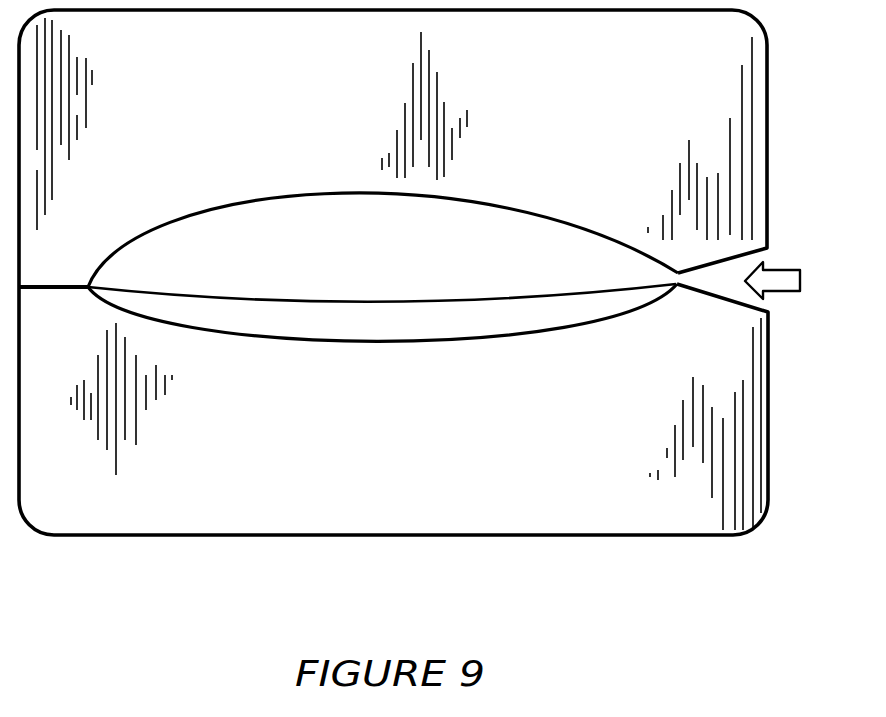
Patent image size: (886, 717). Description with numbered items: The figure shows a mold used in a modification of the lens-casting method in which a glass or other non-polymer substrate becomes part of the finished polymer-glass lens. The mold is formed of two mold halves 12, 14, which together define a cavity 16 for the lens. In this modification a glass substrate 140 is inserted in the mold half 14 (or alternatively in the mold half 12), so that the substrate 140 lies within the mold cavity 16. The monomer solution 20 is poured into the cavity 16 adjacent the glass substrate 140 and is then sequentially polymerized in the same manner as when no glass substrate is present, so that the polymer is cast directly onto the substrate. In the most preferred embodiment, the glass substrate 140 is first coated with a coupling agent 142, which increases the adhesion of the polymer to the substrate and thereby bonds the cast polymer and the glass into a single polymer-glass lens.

The mold half 12 is at (393, 93).
The mold half 14 is at (392, 470).
The cavity 16 is at (552, 255).
The monomer solution 20 is at (795, 281).
The glass substrate 140 is at (585, 317).
The coupling agent 142 is at (673, 288).